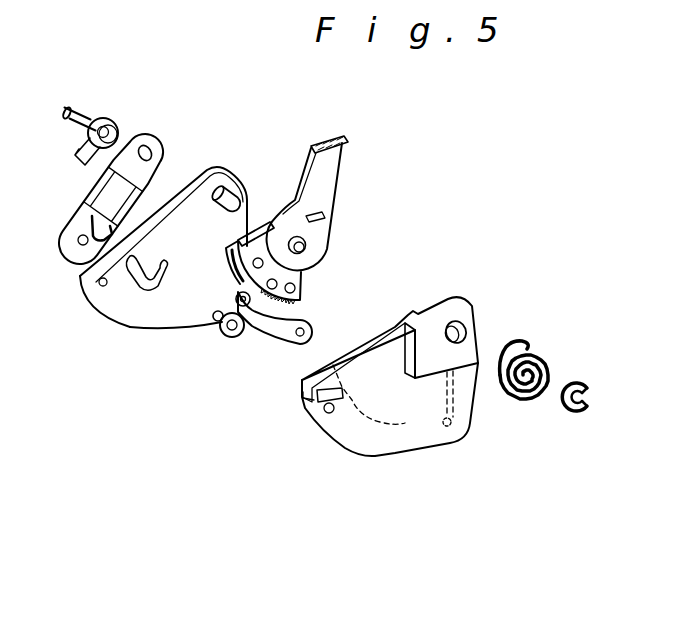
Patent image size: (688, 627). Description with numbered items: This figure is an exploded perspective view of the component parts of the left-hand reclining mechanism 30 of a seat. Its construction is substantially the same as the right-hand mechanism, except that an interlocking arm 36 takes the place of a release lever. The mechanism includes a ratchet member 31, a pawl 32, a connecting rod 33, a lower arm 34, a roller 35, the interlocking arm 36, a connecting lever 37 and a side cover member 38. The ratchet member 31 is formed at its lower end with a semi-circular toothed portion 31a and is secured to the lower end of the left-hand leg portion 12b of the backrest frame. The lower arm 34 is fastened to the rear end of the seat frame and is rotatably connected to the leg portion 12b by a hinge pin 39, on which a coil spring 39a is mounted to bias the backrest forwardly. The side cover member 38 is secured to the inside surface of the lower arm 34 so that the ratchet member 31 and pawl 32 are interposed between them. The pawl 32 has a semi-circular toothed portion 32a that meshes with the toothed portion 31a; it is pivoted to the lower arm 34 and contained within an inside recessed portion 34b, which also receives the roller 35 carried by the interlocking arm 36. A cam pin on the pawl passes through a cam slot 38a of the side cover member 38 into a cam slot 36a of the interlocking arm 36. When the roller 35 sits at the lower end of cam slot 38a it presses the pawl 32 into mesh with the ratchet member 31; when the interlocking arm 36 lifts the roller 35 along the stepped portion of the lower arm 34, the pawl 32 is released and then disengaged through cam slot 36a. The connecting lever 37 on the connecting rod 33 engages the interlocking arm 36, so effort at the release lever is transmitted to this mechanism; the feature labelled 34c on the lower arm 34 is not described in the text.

The left-hand leg portion 12b is at (338, 156).
The left-hand reclining mechanism 30 is at (430, 218).
The ratchet member 31 is at (313, 277).
The semi-circular toothed portion 31a is at (293, 315).
The pawl 32 is at (288, 354).
The semi-circular toothed portion 32a is at (253, 303).
The connecting rod 33 is at (76, 94).
The lower arm 34 is at (394, 460).
The inside recessed portion 34b is at (365, 413).
The bracket opening 34c is at (390, 405).
The roller 35 is at (219, 337).
The interlocking arm 36 is at (163, 133).
The cam slot 36a is at (128, 238).
The connecting lever 37 is at (108, 108).
The side cover member 38 is at (153, 336).
The cam slot 38a is at (143, 283).
The hinge pin 39 is at (238, 183).
The coil spring 39a is at (545, 362).